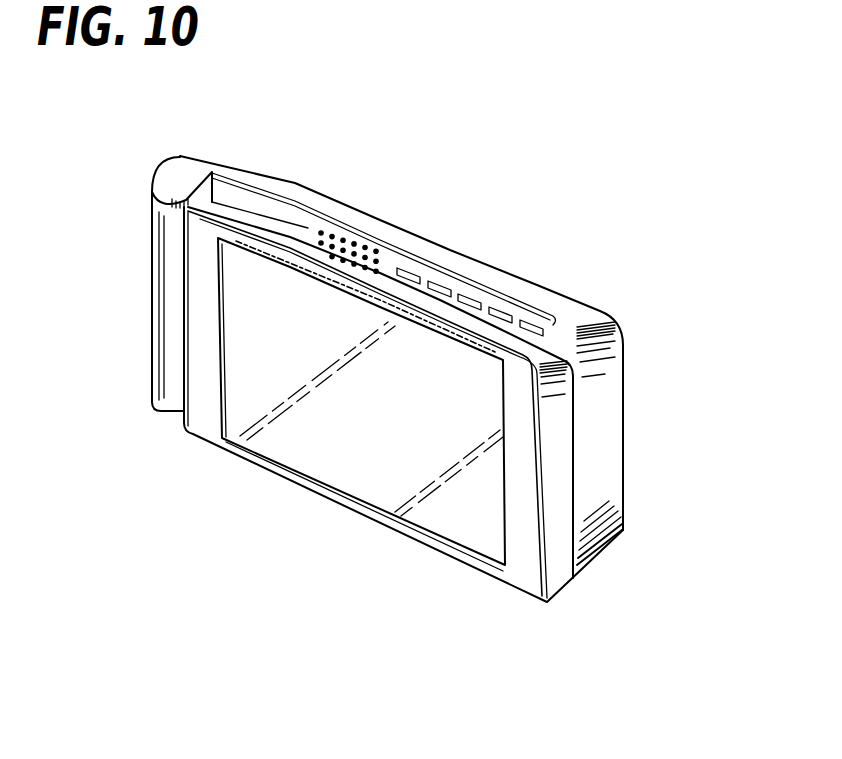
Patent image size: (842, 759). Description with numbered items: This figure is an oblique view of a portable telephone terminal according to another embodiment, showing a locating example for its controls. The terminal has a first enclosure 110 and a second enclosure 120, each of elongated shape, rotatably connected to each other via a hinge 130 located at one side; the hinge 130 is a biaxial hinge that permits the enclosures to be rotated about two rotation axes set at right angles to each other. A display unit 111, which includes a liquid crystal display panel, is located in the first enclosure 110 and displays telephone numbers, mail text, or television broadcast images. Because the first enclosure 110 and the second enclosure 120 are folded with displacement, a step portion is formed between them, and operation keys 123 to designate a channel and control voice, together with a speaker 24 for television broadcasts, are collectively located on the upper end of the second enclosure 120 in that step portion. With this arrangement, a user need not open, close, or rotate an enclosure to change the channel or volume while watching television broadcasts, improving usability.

The hinge 130 is at (176, 181).
The speaker 24 is at (347, 252).
The operation keys 123 is at (474, 281).
The second enclosure 120 is at (603, 428).
The first enclosure 110 is at (532, 562).
The display unit 111 is at (374, 463).